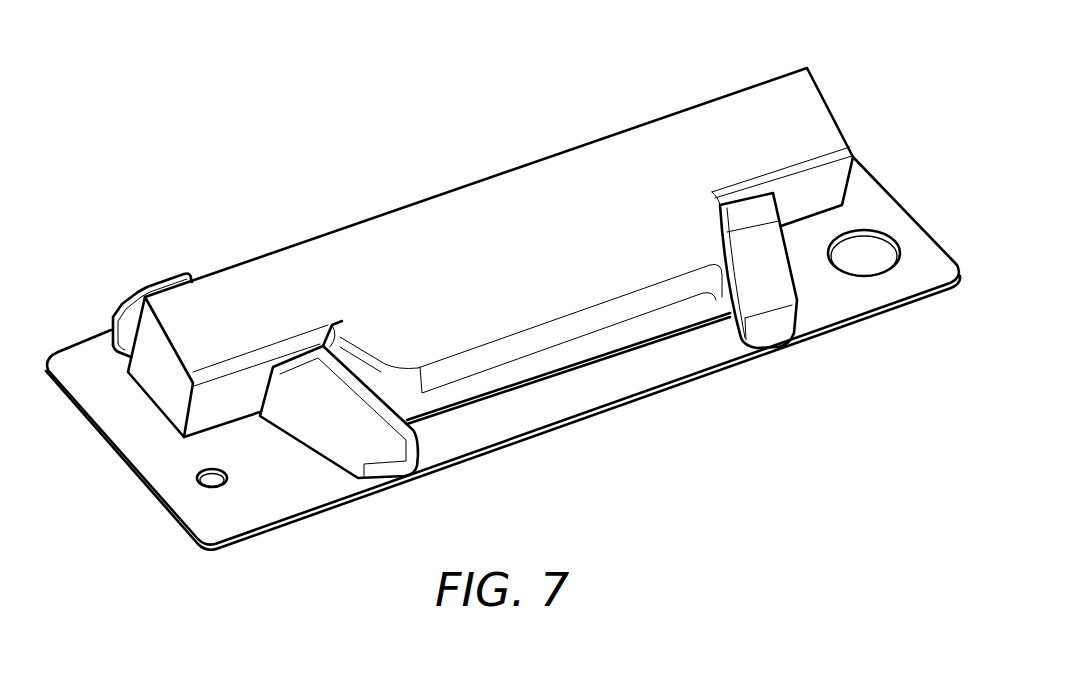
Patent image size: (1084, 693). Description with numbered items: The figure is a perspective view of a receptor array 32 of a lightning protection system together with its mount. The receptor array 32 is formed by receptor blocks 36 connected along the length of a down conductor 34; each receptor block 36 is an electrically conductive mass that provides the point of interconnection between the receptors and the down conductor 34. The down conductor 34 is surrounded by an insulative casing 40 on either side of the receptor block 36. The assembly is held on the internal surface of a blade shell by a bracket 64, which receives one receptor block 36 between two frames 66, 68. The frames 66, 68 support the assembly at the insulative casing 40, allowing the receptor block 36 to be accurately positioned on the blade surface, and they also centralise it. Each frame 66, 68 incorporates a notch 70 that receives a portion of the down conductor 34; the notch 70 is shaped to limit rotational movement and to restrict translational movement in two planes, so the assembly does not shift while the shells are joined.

The receptor array 32 is at (560, 102).
The down conductor 34 is at (161, 394).
The receptor block 36 is at (477, 182).
The insulative casing 40 is at (225, 290).
The bracket 64 is at (290, 515).
The frame 66 is at (400, 465).
The frame 68 is at (777, 332).
The notch 70 is at (253, 412).